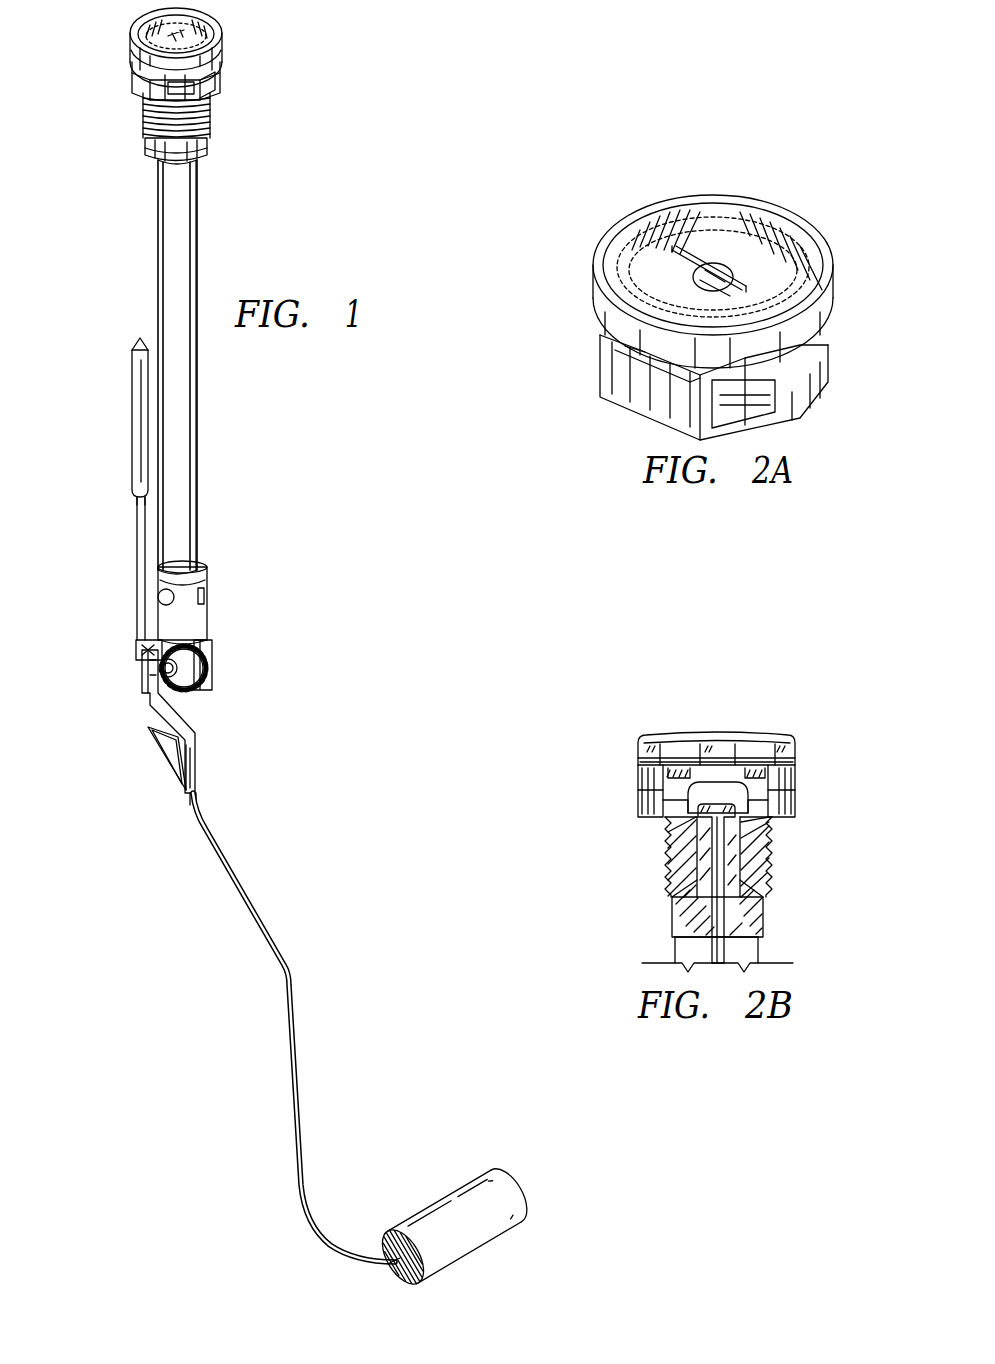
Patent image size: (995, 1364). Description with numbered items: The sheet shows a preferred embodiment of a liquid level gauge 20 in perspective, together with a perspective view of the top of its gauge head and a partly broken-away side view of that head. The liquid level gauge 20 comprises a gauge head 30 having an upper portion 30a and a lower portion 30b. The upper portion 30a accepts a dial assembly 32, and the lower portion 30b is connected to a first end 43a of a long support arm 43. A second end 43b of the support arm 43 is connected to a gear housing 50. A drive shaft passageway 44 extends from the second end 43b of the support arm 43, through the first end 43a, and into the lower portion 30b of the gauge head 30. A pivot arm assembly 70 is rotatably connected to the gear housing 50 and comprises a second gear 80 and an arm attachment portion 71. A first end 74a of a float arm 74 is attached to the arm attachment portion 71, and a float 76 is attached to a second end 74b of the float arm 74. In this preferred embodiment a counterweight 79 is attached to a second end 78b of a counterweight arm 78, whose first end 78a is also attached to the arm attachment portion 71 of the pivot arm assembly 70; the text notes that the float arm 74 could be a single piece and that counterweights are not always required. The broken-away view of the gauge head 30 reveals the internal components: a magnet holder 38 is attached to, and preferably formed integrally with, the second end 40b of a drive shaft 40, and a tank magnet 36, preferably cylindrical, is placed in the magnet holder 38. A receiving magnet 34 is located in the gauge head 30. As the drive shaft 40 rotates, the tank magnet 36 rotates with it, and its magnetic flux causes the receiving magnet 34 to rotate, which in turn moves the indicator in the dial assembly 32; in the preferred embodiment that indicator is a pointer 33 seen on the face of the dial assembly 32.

In FIG. 1, the liquid level gauge 20 is at (272, 455).
In FIG. 1, the gauge head 30 is at (118, 47).
In FIG. 2B, the gauge head 30 is at (646, 690).
In FIG. 1, the upper portion 30a is at (232, 52).
In FIG. 2A, the upper portion 30a is at (582, 306).
In FIG. 2B, the upper portion 30a is at (634, 760).
In FIG. 1, the lower portion 30b is at (138, 154).
In FIG. 2B, the lower portion 30b is at (664, 952).
In FIG. 1, the dial assembly 32 is at (214, 18).
In FIG. 2A, the dial assembly 32 is at (790, 236).
In FIG. 2B, the dial assembly 32 is at (753, 735).
In FIG. 2A, the pointer 33 is at (703, 258).
In FIG. 2B, the receiving magnet 34 is at (712, 784).
In FIG. 2B, the tank magnet 36 is at (670, 838).
In FIG. 2B, the magnet holder 38 is at (698, 858).
In FIG. 2B, the drive shaft 40 is at (712, 888).
In FIG. 2B, the second end of the drive shaft 40b is at (736, 860).
In FIG. 1, the support arm 43 is at (158, 262).
In FIG. 1, the first end of the support arm 43a is at (200, 170).
In FIG. 2B, the first end of the support arm 43a is at (763, 944).
In FIG. 1, the second end of the support arm 43b is at (205, 556).
In FIG. 2B, the drive shaft passageway 44 is at (738, 870).
In FIG. 1, the gear housing 50 is at (222, 603).
In FIG. 1, the pivot arm assembly 70 is at (122, 684).
In FIG. 1, the arm attachment portion 71 is at (195, 735).
In FIG. 1, the float arm 74 is at (252, 920).
In FIG. 1, the first end of the float arm 74a is at (204, 796).
In FIG. 1, the second end of the float arm 74b is at (378, 1270).
In FIG. 1, the float 76 is at (442, 1210).
In FIG. 1, the counterweight arm 78 is at (136, 548).
In FIG. 1, the first end of the counterweight arm 78a is at (138, 640).
In FIG. 1, the second end of the counterweight arm 78b is at (130, 505).
In FIG. 1, the counterweight 79 is at (132, 412).
In FIG. 1, the second gear 80 is at (200, 665).